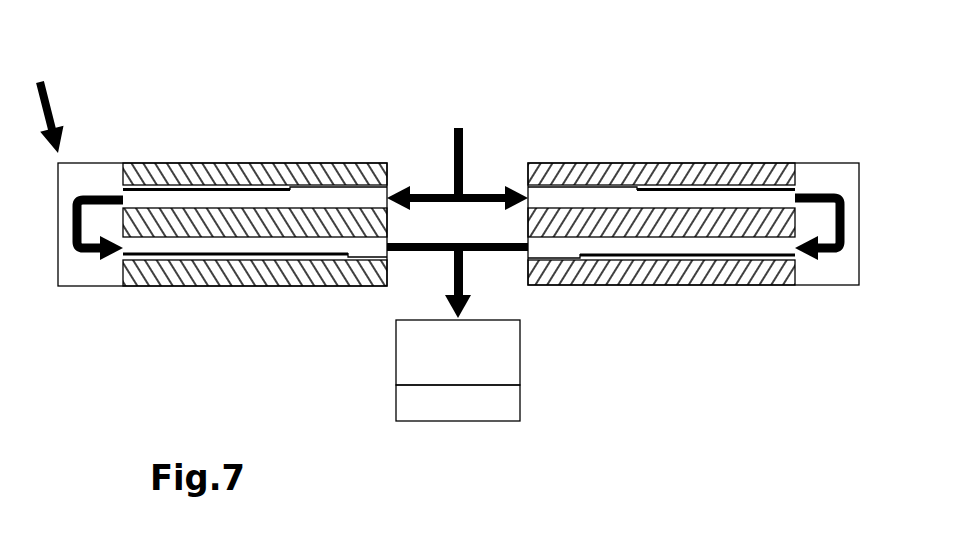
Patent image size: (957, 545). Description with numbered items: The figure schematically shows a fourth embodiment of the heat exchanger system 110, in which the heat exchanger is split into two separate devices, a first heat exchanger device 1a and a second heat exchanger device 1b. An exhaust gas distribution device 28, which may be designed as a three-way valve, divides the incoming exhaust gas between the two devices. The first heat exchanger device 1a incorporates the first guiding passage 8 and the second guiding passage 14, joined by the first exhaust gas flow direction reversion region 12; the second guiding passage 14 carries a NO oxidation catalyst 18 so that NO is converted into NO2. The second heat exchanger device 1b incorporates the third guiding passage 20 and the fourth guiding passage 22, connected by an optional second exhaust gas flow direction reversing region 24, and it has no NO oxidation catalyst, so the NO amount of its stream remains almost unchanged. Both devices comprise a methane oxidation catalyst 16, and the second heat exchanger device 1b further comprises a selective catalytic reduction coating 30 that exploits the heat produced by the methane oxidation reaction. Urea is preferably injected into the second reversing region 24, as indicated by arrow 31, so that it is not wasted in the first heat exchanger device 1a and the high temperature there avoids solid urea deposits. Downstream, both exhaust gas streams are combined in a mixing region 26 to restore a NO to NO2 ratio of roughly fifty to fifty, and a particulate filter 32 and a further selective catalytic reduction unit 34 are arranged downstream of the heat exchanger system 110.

The heat exchanger system 110 is at (418, 87).
The arrow 31 is at (49, 103).
The second heat exchanger device 1b is at (175, 163).
The first heat exchanger device 1a is at (765, 162).
The methane oxidation catalyst 16 is at (242, 190).
The selective catalytic reduction coating 30 is at (250, 256).
The NO oxidation catalyst 18 is at (699, 257).
The fourth guiding passage 22 is at (338, 197).
The first guiding passage 8 is at (583, 196).
The third guiding passage 20 is at (372, 247).
The second guiding passage 14 is at (547, 254).
The second exhaust gas flow direction reversing region 24 is at (93, 258).
The first exhaust gas flow direction reversion region 12 is at (827, 250).
The exhaust gas distribution device 28 is at (463, 146).
The mixing region 26 is at (455, 254).
The particulate filter 32 is at (513, 350).
The further selective catalytic reduction unit 34 is at (513, 402).